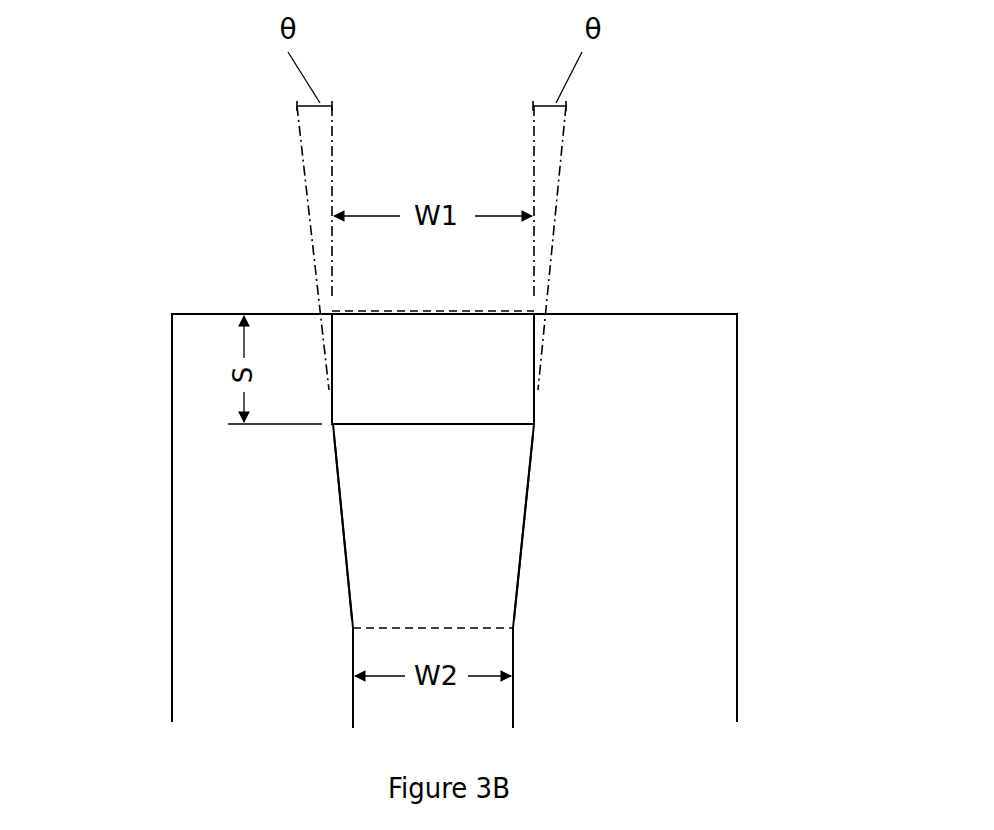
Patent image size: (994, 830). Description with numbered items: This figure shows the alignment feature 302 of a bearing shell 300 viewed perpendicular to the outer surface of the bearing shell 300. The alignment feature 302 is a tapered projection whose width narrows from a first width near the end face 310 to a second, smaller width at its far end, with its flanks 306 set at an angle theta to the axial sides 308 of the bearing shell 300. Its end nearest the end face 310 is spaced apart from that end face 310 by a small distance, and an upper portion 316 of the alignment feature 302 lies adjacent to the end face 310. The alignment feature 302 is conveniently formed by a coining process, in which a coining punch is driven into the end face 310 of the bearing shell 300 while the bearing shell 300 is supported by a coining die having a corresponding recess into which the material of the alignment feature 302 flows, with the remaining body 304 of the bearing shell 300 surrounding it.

The bearing shell 300 is at (150, 137).
The alignment feature 302 is at (409, 504).
The substrate 304 is at (594, 646).
The trench sidewalls 306 is at (340, 518).
The outer edges of substrate 308 is at (172, 385).
The end face 310 is at (648, 314).
The upper portion of trench 316 is at (420, 423).